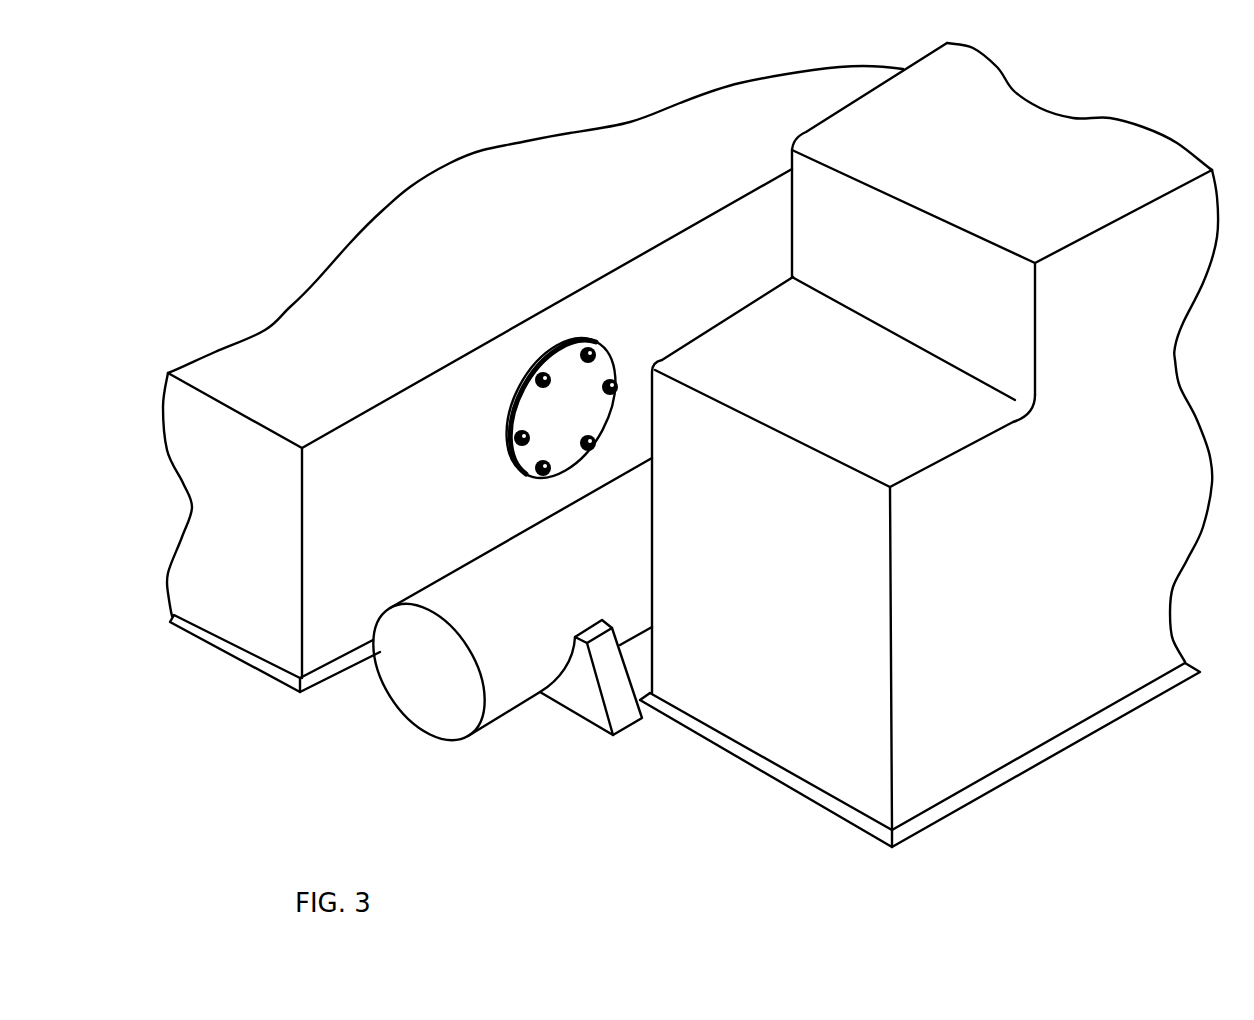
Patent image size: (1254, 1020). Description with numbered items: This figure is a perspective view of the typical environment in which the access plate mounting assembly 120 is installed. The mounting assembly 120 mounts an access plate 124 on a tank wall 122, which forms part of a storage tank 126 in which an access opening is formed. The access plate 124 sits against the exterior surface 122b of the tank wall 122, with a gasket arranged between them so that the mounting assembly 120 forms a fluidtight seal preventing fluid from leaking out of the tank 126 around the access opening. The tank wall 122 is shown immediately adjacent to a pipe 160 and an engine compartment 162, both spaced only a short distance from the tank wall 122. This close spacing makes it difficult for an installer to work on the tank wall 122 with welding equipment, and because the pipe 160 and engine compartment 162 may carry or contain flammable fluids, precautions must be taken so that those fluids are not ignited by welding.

The access plate mounting assembly 120 is at (620, 350).
The tank wall 122 is at (437, 400).
The exterior surface of the tank wall 122b is at (390, 488).
The access plate 124 is at (525, 458).
The storage tank 126 is at (250, 628).
The pipe 160 is at (510, 688).
The engine compartment 162 is at (780, 742).